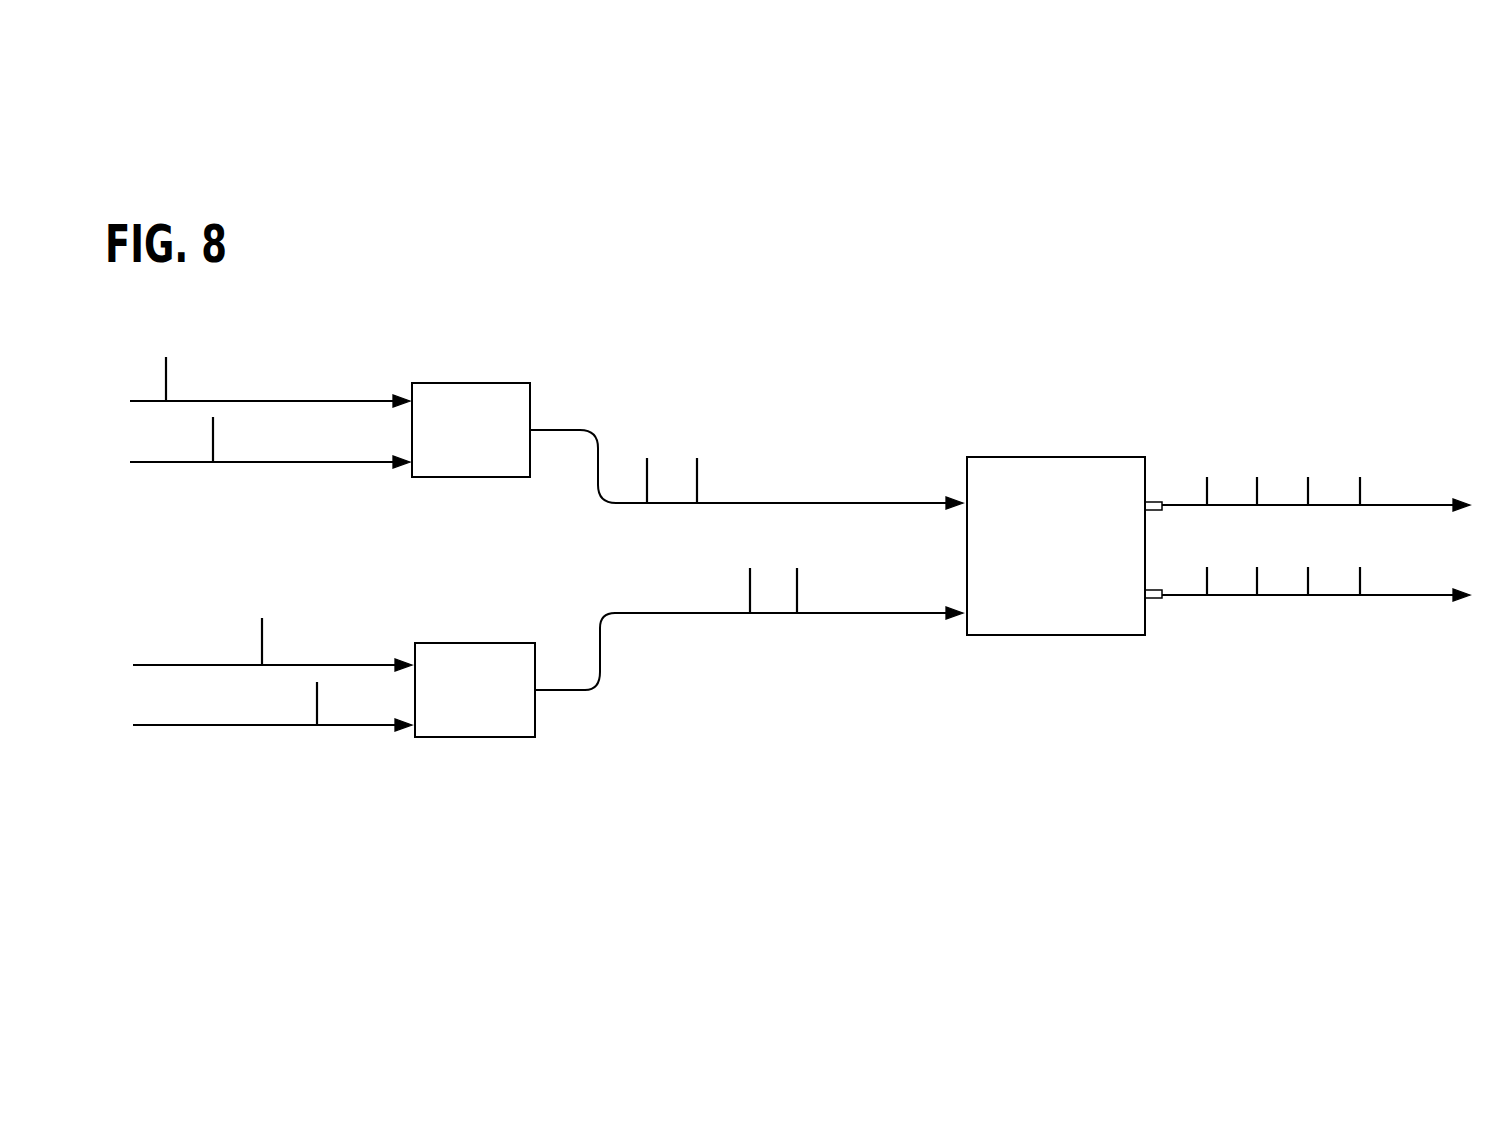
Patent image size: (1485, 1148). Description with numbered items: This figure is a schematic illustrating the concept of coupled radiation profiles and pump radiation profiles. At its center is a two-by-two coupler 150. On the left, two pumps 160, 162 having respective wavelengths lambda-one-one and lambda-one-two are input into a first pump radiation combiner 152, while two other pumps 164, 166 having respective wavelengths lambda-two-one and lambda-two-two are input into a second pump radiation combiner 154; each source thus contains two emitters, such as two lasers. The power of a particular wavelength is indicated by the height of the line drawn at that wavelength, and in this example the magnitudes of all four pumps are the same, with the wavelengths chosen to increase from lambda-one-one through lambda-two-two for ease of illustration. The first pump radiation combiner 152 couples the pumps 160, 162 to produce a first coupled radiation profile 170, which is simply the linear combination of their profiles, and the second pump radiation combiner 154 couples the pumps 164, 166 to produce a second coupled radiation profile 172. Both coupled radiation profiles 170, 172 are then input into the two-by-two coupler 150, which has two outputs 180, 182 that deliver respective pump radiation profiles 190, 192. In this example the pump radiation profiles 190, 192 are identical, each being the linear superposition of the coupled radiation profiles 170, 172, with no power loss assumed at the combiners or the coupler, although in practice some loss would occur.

The 2×2 coupler 150 is at (1060, 457).
The first pump radiation combiner 152 is at (495, 383).
The second pump radiation combiner 154 is at (498, 737).
The pump 160 is at (165, 366).
The pump 162 is at (214, 450).
The pump 164 is at (259, 630).
The pump 166 is at (318, 713).
The first coupled radiation profile 170 is at (708, 450).
The second coupled radiation profile 172 is at (810, 562).
The output 180 is at (1163, 498).
The output 182 is at (1161, 600).
The pump radiation profile 190 is at (1365, 468).
The pump radiation profile 192 is at (1365, 638).